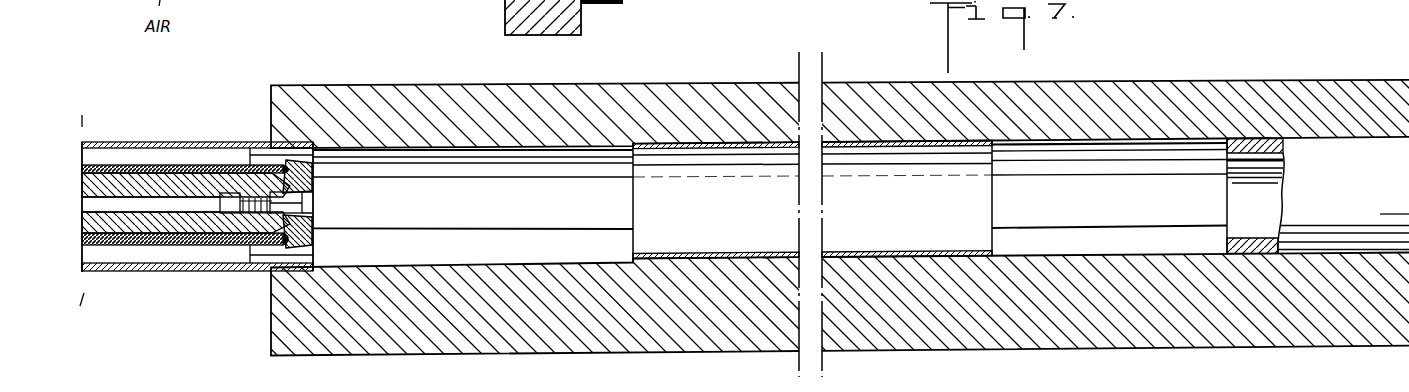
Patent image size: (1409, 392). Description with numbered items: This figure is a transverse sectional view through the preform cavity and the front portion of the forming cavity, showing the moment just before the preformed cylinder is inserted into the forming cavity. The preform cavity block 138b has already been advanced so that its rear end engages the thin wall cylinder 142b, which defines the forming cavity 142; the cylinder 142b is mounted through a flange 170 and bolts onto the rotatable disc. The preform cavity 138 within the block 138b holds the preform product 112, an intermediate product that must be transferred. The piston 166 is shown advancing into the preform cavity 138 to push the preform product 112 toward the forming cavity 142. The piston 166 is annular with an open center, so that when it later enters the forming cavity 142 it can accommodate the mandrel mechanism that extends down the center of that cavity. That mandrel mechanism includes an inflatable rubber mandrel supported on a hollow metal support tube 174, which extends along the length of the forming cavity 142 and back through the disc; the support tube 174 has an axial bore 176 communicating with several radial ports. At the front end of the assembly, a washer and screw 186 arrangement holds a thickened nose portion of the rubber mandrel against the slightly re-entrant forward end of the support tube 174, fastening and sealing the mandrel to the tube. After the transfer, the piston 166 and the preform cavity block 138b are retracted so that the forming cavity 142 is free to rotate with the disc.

The preform product 112 is at (900, 254).
The preform cavity 138 is at (539, 218).
The preform cavity block 138b is at (613, 338).
The forming cavity 142 is at (187, 160).
The thin wall cylinder 142b is at (118, 142).
The piston 166 is at (1255, 148).
The flange 170 is at (623, 2).
The support tube 174 is at (103, 227).
The axial bore 176 is at (130, 207).
The screw 186 is at (252, 183).